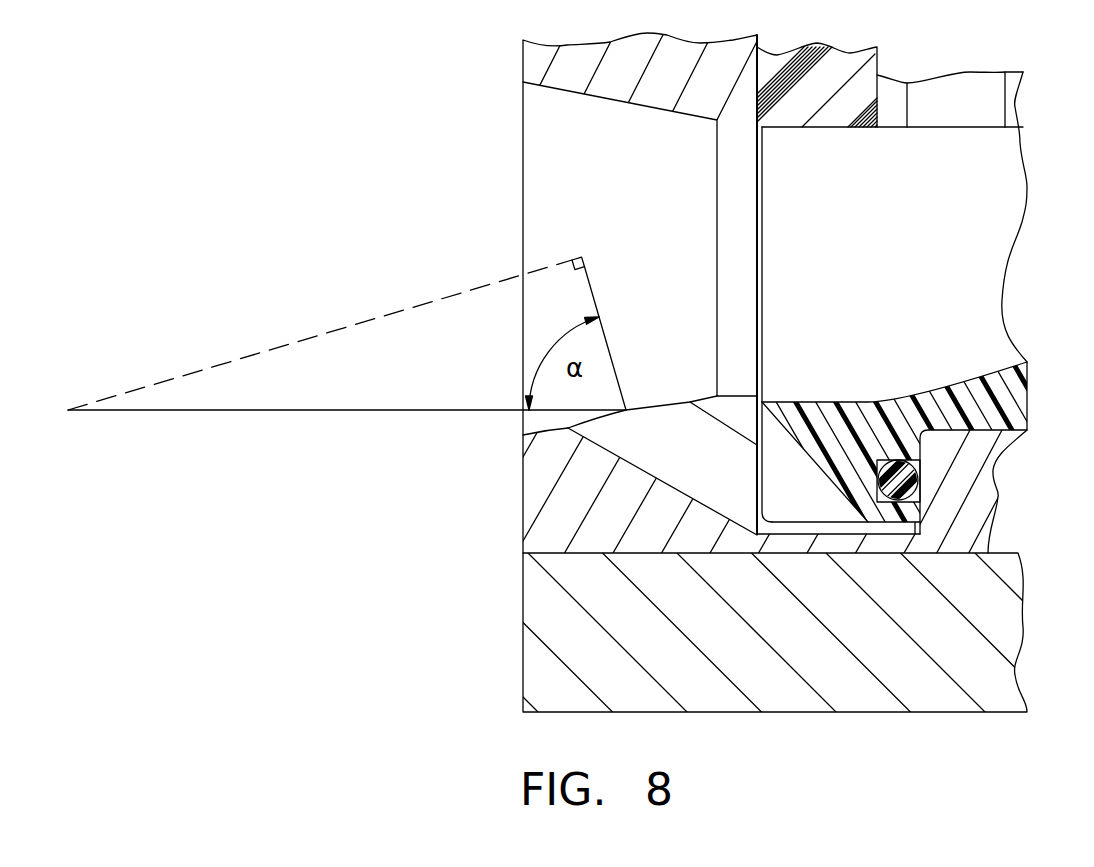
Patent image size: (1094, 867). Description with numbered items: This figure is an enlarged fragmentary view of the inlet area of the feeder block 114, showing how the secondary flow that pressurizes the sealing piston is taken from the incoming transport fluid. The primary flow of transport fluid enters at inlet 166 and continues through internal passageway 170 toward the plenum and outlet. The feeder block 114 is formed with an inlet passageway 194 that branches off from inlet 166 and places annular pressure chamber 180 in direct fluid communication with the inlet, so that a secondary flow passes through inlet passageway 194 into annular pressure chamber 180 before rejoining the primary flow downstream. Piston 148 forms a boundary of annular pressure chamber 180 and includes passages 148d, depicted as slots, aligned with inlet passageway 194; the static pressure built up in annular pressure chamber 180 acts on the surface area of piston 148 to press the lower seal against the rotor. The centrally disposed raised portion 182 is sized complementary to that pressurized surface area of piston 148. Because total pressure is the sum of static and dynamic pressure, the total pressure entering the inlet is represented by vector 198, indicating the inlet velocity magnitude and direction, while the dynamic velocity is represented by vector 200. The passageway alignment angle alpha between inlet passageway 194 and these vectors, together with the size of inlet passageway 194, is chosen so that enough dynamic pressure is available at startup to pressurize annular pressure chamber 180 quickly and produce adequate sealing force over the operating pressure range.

The feeder block 114 is at (980, 612).
The piston 148 is at (948, 387).
The passages 148d is at (785, 492).
The inlet 166 is at (550, 188).
The internal passageway 170 is at (917, 264).
The annular pressure chamber 180 is at (833, 527).
The centrally disposed raised portion 182 is at (960, 475).
The inlet passageway 194 is at (663, 442).
The vector 198 is at (347, 412).
The vector 200 is at (595, 297).